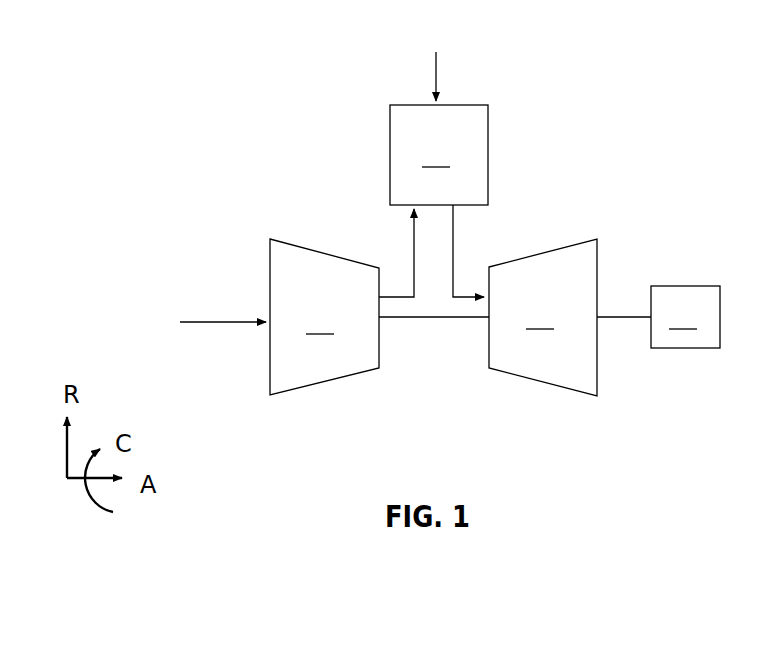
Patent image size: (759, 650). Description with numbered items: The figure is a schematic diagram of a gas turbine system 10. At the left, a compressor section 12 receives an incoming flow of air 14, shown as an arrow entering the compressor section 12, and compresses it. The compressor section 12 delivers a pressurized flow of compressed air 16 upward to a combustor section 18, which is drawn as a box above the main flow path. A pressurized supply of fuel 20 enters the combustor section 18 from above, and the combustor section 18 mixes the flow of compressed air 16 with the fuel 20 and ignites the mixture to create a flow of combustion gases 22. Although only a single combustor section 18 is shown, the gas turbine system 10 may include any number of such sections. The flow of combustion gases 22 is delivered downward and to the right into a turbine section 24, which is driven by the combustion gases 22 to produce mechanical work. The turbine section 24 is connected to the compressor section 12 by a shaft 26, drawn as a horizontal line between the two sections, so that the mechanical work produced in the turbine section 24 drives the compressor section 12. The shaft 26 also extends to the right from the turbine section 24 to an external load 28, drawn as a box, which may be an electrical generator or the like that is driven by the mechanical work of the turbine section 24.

The gas turbine system 10 is at (312, 126).
The compressor section 12 is at (324, 317).
The flow of air 14 is at (232, 320).
The flow of compressed air 16 is at (413, 262).
The combustor section 18 is at (439, 155).
The pressurized supply of fuel 20 is at (436, 77).
The flow of combustion gases 22 is at (455, 263).
The turbine section 24 is at (543, 317).
The shaft 26 is at (442, 317).
The external load 28 is at (685, 317).